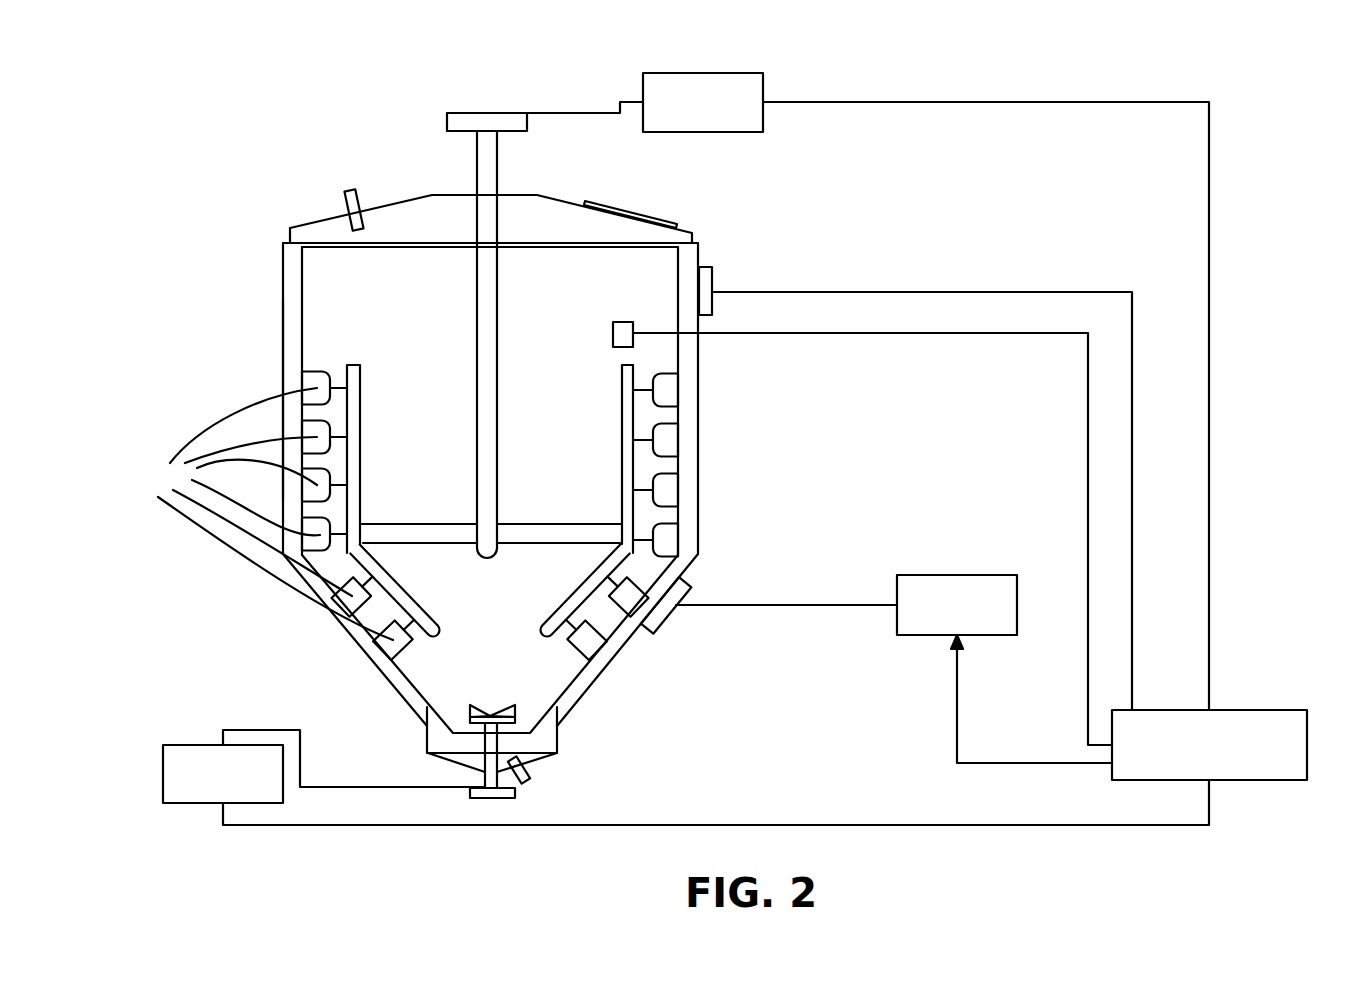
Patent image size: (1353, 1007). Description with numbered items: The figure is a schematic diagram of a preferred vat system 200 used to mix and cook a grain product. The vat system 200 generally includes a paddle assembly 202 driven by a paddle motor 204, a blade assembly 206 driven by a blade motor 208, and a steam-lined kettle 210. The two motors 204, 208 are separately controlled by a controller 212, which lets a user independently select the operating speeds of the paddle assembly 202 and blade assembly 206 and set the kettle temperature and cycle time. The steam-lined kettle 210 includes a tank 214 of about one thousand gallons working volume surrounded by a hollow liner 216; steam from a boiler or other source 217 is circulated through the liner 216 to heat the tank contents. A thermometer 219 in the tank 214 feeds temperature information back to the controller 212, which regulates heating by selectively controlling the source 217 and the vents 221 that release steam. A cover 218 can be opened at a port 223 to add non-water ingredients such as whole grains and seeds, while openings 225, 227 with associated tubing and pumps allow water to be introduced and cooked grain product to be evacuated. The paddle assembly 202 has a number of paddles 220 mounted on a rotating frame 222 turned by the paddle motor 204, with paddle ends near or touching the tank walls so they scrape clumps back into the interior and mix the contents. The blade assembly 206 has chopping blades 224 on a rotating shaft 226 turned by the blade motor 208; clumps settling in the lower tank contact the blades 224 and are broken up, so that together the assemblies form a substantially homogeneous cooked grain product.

The vat system 200 is at (1242, 162).
The paddle assembly 202 is at (548, 331).
The paddle motor 204 is at (763, 112).
The blade assembly 206 is at (512, 658).
The blade motor 208 is at (163, 773).
The steam-lined kettle 210 is at (803, 237).
The controller 212 is at (1292, 710).
The tank 214 is at (418, 166).
The liner 216 is at (283, 323).
The source 217 is at (957, 575).
The cover 218 is at (395, 202).
The thermometer 219 is at (615, 349).
The paddles 220 is at (405, 512).
The vents 221 is at (708, 266).
The rotating frame 222 is at (523, 490).
The port 223 is at (620, 200).
The chopping blades 224 is at (505, 703).
The opening 225 is at (345, 205).
The rotating shaft 226 is at (488, 748).
The opening 227 is at (530, 770).